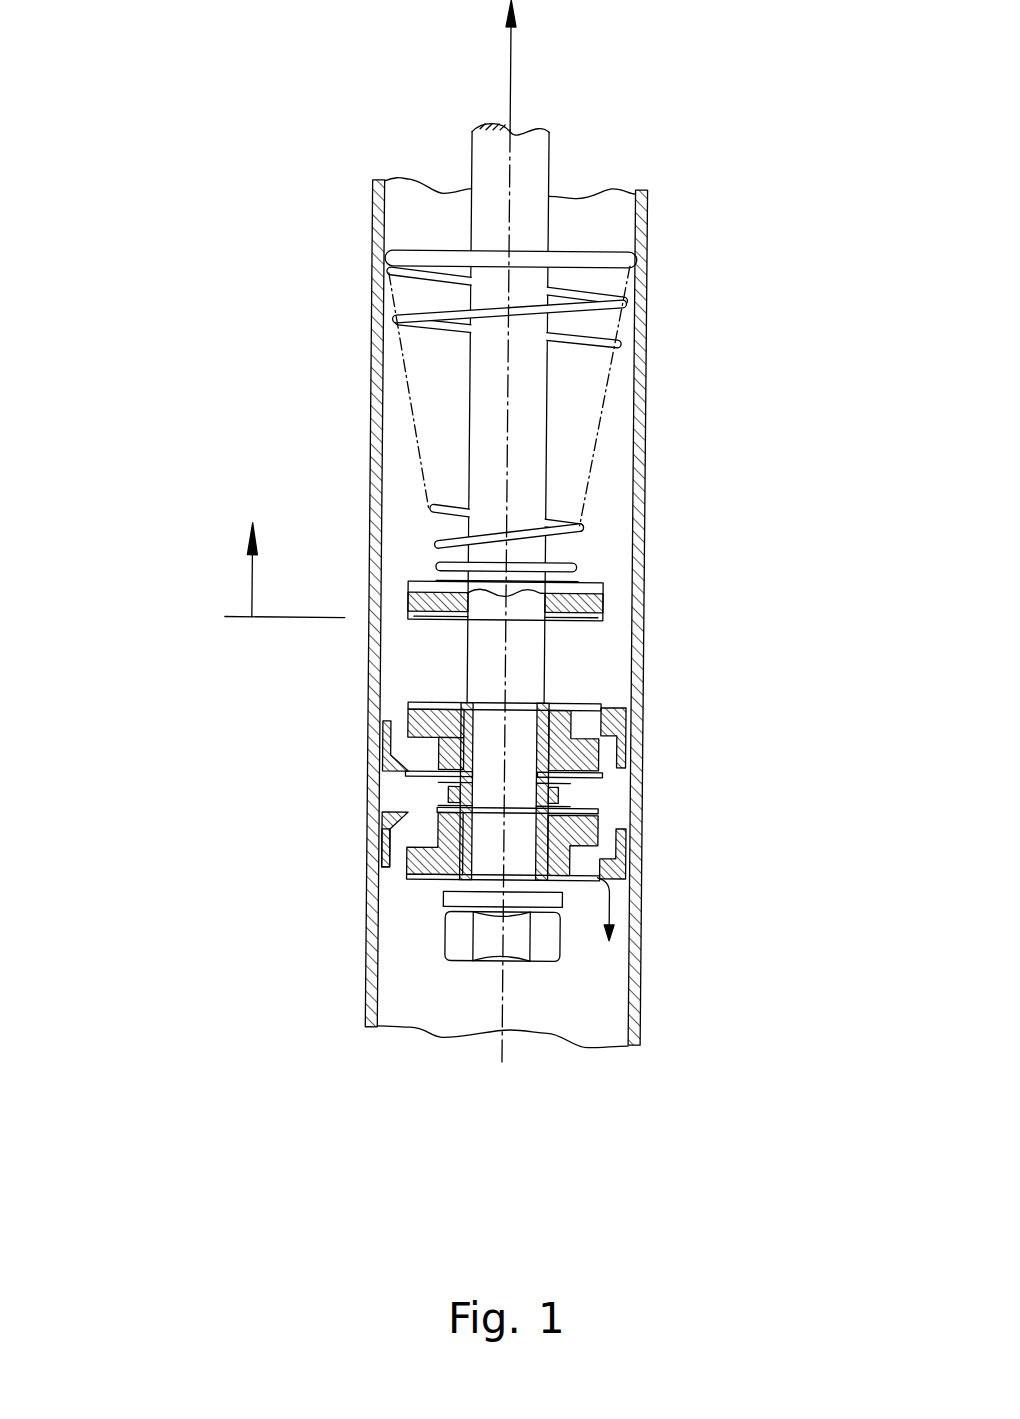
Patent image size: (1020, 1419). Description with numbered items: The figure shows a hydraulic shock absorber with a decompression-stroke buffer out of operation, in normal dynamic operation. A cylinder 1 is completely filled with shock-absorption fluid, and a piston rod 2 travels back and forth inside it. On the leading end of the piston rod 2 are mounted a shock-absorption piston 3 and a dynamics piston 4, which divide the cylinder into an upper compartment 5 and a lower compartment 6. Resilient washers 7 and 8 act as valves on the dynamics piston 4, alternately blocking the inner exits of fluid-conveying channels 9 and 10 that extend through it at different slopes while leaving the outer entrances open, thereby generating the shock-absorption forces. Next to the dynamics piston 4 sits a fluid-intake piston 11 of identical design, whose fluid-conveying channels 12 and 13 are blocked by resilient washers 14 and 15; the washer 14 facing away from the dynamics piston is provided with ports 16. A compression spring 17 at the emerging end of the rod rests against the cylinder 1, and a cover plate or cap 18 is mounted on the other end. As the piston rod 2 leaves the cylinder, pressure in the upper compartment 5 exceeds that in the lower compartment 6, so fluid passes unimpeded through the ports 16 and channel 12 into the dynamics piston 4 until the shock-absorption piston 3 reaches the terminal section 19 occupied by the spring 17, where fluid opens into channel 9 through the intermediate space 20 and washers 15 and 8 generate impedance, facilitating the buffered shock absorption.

The cylinder 1 is at (647, 521).
The piston rod 2 is at (526, 456).
The shock-absorption piston 3 is at (340, 789).
The dynamics piston 4 is at (395, 848).
The upper compartment 5 is at (590, 421).
The lower compartment 6 is at (503, 1012).
The resilient washer 7 is at (432, 794).
The resilient washer 8 is at (436, 888).
The fluid-conveying channel 9 is at (604, 855).
The fluid-conveying channel 10 is at (403, 864).
The fluid-intake piston 11 is at (421, 733).
The fluid-conveying channel 12 is at (633, 724).
The fluid-conveying channel 13 is at (406, 712).
The resilient washer 14 is at (568, 700).
The resilient washer 15 is at (563, 791).
The ports 16 is at (580, 703).
The compression spring 17 is at (579, 526).
The cap 18 is at (583, 584).
The terminal section 19 is at (285, 546).
The intermediate space 20 is at (604, 798).